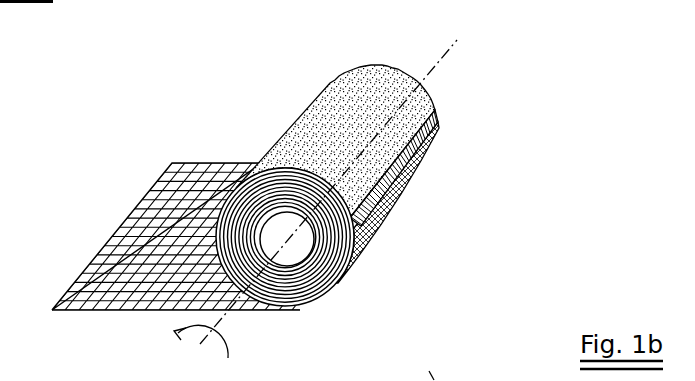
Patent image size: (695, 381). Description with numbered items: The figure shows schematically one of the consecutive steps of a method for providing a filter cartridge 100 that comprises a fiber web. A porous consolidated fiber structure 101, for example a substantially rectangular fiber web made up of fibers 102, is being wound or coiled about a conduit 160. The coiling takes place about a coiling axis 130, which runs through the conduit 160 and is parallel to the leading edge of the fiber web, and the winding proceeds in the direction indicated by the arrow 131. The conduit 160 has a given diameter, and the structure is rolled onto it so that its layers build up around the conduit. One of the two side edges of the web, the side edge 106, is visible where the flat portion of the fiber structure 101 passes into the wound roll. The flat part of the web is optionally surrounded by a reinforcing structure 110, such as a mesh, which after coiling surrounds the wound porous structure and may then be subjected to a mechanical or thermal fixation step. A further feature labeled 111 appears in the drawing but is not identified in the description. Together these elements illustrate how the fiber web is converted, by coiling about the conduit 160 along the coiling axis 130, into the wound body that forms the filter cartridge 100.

The filter cartridge 100 is at (400, 380).
The porous consolidated fiber structure 101 is at (430, 140).
The fibers 102 is at (380, 103).
The side edge 106 is at (350, 210).
The reinforcing structure 110 is at (207, 261).
The rolled portion 111 is at (285, 171).
The coiling axis 130 is at (328, 206).
The arrow 131 is at (172, 352).
The conduit 160 is at (297, 250).